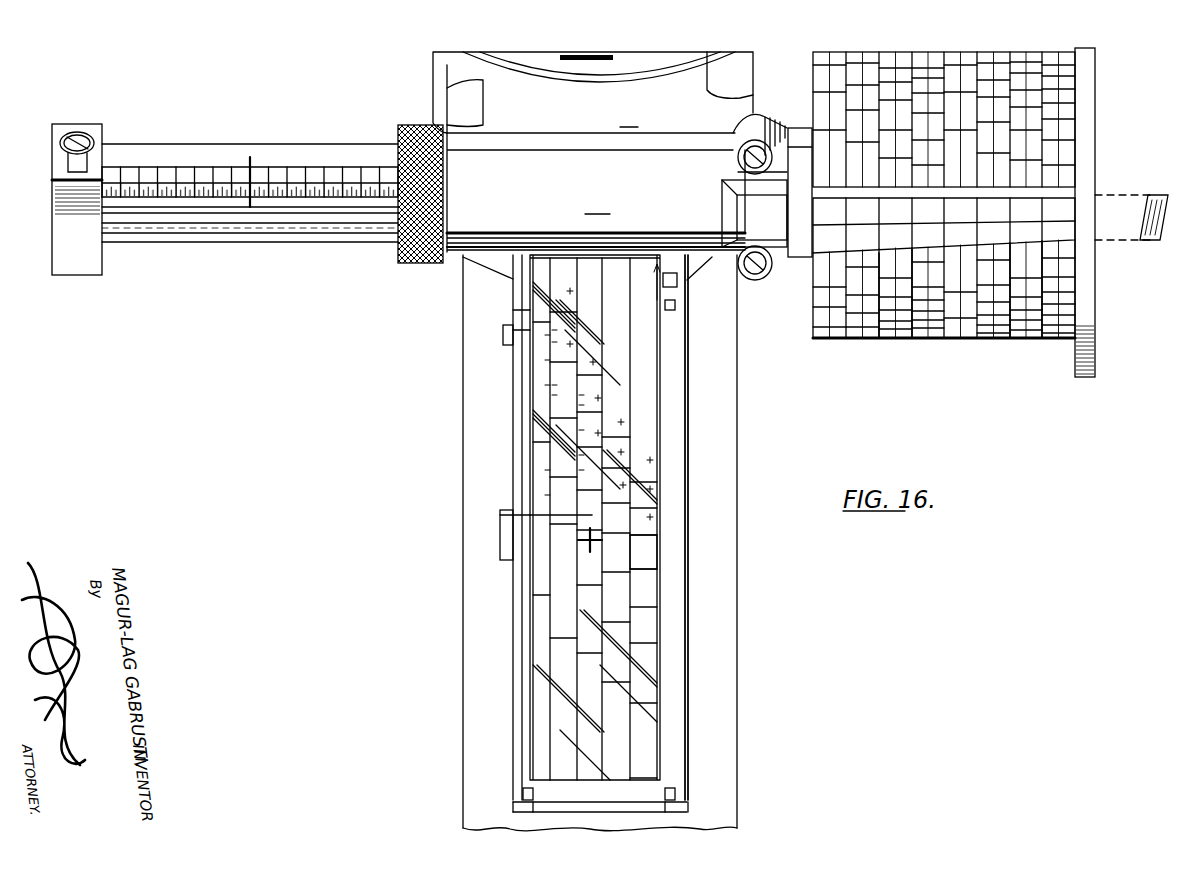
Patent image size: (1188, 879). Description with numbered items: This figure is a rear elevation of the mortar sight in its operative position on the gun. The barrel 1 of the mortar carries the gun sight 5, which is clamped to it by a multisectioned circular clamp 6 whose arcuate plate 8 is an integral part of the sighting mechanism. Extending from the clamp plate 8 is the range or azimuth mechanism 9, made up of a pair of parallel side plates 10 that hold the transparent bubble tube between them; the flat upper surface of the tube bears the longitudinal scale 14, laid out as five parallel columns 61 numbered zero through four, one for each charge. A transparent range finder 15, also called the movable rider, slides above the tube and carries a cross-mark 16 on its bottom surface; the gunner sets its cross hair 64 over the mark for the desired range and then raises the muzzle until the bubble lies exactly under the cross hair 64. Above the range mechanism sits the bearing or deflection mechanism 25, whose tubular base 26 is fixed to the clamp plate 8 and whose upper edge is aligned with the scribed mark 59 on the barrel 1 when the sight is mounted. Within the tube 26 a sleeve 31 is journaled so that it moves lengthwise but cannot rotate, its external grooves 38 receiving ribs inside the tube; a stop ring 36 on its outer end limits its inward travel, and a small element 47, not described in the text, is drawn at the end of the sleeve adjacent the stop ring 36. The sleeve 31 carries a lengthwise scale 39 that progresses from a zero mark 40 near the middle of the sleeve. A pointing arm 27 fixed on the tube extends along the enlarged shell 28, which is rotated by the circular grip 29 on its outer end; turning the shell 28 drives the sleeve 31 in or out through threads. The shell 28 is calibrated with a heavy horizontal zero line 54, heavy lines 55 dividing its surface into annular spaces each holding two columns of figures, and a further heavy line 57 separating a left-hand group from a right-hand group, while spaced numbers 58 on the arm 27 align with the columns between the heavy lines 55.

The barrel 1 is at (717, 730).
The gun sight 5 is at (420, 262).
The circular clamp 6 is at (460, 108).
The arcuate plate 8 is at (593, 92).
The range or azimuth mechanism 9 is at (690, 578).
The side plates 10 is at (522, 729).
The longitudinal scale 14 is at (657, 620).
The range finder 15 is at (500, 556).
The cross-mark 16 is at (575, 545).
The bearing or deflection mechanism 25 is at (948, 345).
The tubular base 26 is at (596, 192).
The pointing arm 27 is at (1043, 226).
The shell 28 is at (1027, 340).
The circular handle or grip 29 is at (1080, 376).
The sleeve 31 is at (305, 157).
The stop ring 36 is at (80, 265).
The external grooves 38 is at (313, 210).
The scale 39 is at (183, 165).
The zero mark 40 is at (250, 156).
The screw 47 is at (101, 144).
The heavy horizontal line 54 is at (1046, 187).
The heavy lines 55 is at (887, 340).
The heavy line 57 is at (943, 340).
The spaced numbers 58 is at (1093, 225).
The scribed mark 59 is at (578, 60).
The longitudinal scales 61 is at (655, 489).
The cross hair 64 is at (648, 546).